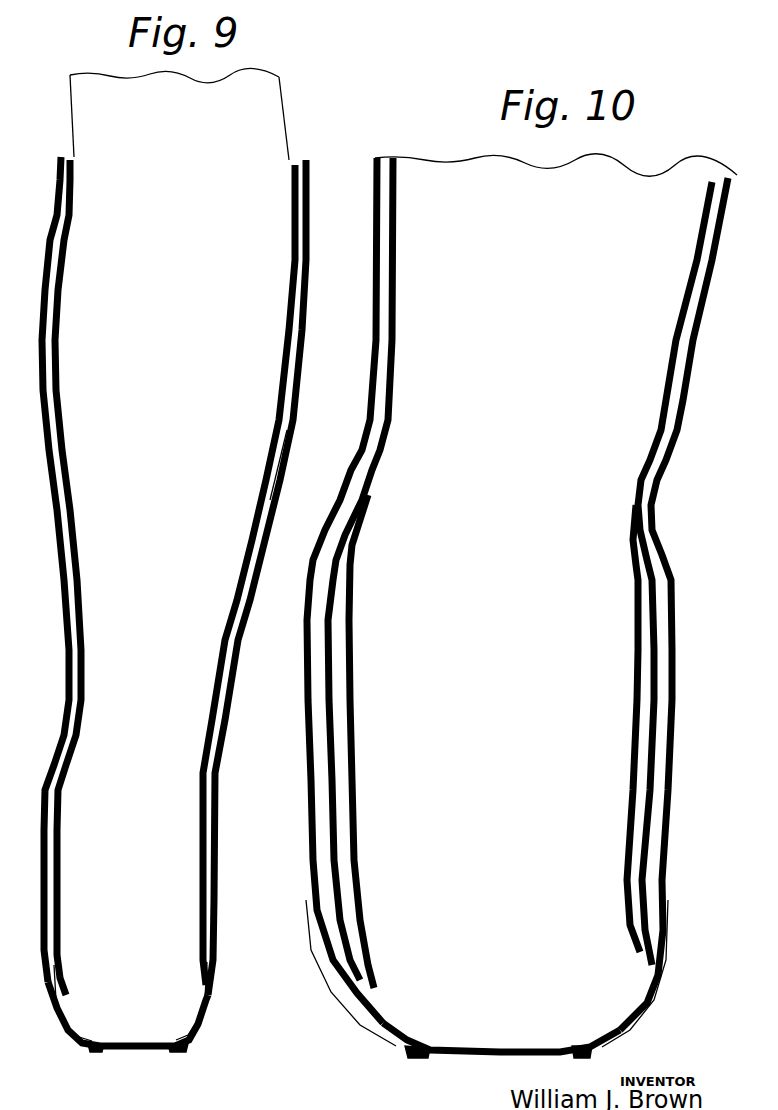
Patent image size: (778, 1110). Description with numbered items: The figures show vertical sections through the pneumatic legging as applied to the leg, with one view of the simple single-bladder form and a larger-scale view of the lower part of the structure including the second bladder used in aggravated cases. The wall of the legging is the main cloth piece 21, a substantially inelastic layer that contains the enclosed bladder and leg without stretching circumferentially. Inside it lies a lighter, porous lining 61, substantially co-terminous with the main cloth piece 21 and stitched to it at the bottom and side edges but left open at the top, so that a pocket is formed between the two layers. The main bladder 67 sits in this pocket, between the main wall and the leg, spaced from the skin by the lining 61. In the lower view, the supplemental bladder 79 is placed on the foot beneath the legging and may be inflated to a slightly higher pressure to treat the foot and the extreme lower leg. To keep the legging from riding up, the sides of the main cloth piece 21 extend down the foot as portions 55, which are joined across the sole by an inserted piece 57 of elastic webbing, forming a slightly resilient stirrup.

In FIG. 9, the main cloth piece 21 is at (55, 217).
In FIG. 10, the main cloth piece 21 is at (306, 661).
In FIG. 9, the lining 61 is at (72, 217).
In FIG. 10, the lining 61 is at (374, 475).
In FIG. 9, the main bladder 67 is at (48, 295).
In FIG. 10, the main bladder 67 is at (307, 695).
In FIG. 10, the supplemental bladder 79 is at (338, 647).
In FIG. 9, the foot-side extensions of main cloth piece 55 is at (60, 1008).
In FIG. 10, the foot-side extensions of main cloth piece 55 is at (370, 1008).
In FIG. 9, the inserted piece of elastic webbing 57 is at (122, 1048).
In FIG. 10, the inserted piece of elastic webbing 57 is at (487, 1052).